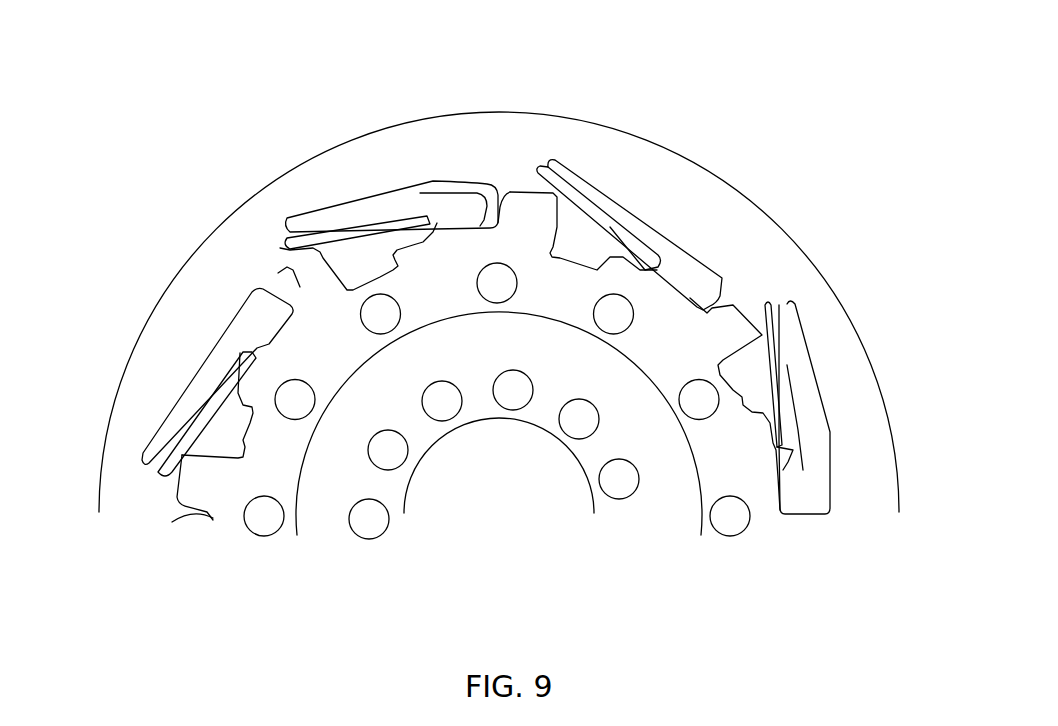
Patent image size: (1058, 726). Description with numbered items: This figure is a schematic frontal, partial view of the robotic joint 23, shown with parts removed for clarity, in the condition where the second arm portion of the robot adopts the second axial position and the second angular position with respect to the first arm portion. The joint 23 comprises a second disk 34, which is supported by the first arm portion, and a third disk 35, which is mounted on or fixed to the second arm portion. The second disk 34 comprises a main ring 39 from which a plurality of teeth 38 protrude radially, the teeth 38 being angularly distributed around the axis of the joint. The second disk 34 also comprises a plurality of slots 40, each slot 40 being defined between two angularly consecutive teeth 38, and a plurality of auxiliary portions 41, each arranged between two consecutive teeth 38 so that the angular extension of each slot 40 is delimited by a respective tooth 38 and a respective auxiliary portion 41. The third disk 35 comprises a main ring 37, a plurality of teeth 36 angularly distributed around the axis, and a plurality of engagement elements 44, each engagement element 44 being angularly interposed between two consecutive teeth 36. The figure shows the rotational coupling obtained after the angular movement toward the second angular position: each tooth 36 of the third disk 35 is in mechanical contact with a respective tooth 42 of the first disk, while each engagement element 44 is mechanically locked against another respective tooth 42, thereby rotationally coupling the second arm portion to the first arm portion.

The joint 23 is at (507, 296).
The second disk 34 is at (453, 265).
The third disk 35 is at (662, 143).
The teeth 36 is at (167, 480).
The main ring 37 is at (862, 322).
The teeth 38 is at (200, 485).
The main ring 39 is at (410, 488).
The slots 40 is at (233, 443).
The auxiliary portions 41 is at (287, 343).
The teeth 42 is at (257, 352).
The engagement elements 44 is at (217, 390).